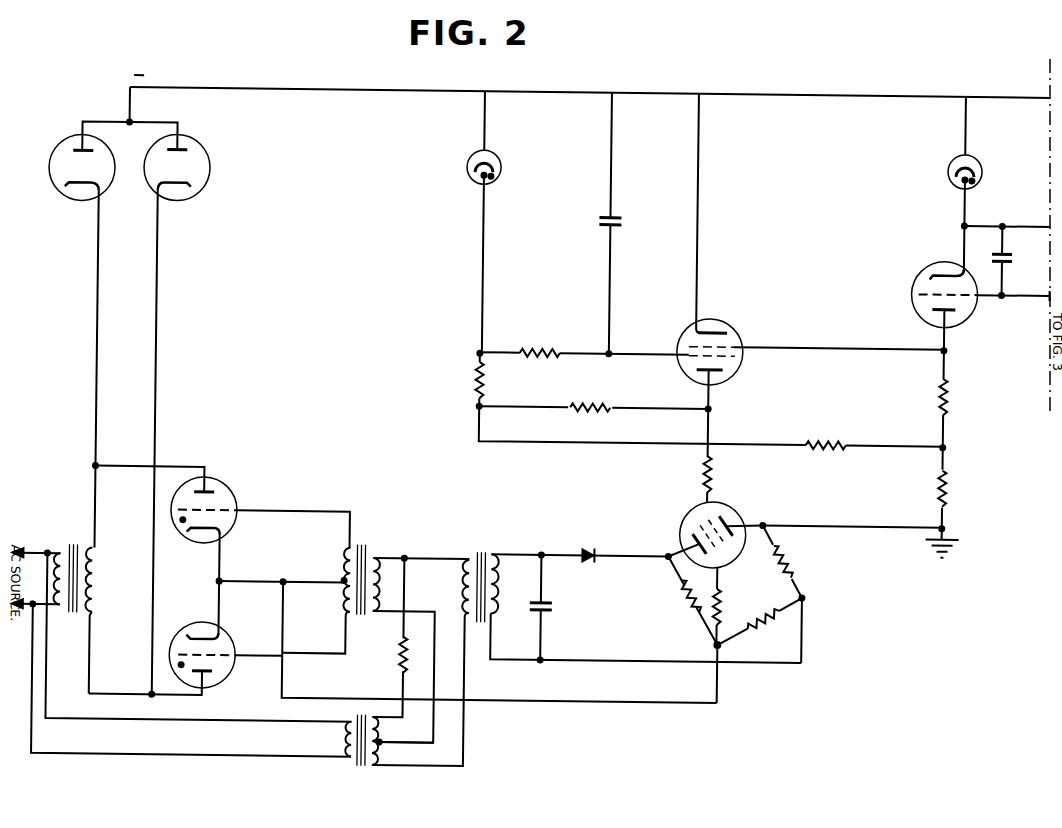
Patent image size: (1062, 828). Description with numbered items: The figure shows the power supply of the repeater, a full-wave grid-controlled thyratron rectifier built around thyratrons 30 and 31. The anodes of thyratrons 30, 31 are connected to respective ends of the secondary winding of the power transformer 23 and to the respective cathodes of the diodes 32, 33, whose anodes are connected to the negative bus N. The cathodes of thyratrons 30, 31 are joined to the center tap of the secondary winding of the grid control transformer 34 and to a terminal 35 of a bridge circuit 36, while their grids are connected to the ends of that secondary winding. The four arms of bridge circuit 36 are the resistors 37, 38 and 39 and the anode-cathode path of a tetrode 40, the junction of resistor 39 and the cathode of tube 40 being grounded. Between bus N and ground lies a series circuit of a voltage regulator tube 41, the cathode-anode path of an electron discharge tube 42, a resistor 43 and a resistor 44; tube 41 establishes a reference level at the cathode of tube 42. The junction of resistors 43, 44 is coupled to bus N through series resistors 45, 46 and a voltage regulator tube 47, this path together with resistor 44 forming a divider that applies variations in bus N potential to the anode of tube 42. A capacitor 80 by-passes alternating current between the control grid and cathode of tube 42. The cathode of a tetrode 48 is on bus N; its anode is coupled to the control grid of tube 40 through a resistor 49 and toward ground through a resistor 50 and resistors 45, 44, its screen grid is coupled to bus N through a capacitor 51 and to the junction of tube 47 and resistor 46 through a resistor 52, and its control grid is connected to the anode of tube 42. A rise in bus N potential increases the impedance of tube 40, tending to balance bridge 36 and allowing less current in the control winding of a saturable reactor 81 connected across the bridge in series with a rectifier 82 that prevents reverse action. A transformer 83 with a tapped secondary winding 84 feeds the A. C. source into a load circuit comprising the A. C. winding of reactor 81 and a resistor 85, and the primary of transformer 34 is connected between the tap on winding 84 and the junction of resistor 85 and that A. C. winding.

The negative bus N is at (822, 88).
The power transformer 23 is at (73, 545).
The thyratron 30 is at (231, 486).
The thyratron 31 is at (221, 676).
The diode 32 is at (203, 150).
The diode 33 is at (62, 150).
The grid control transformer 34 is at (367, 540).
The terminal 35 is at (721, 639).
The bridge circuit 36 is at (705, 595).
The resistor 37 is at (687, 598).
The resistor 38 is at (768, 620).
The resistor 39 is at (797, 553).
The tetrode 40 is at (697, 505).
The voltage regulator tube 41 is at (953, 174).
The electron discharge tube 42 is at (918, 296).
The resistor 43 is at (952, 392).
The resistor 44 is at (952, 480).
The resistor 45 is at (835, 429).
The resistor 46 is at (478, 378).
The voltage regulator tube 47 is at (476, 174).
The tetrode 48 is at (740, 325).
The resistor 49 is at (718, 462).
The resistor 50 is at (605, 398).
The capacitor 51 is at (622, 222).
The resistor 52 is at (540, 342).
The capacitor 80 is at (1010, 252).
The saturable reactor 81 is at (488, 540).
The rectifier 82 is at (599, 544).
The transformer 83 is at (356, 713).
The tapped secondary winding 84 is at (391, 741).
The resistor 85 is at (405, 655).